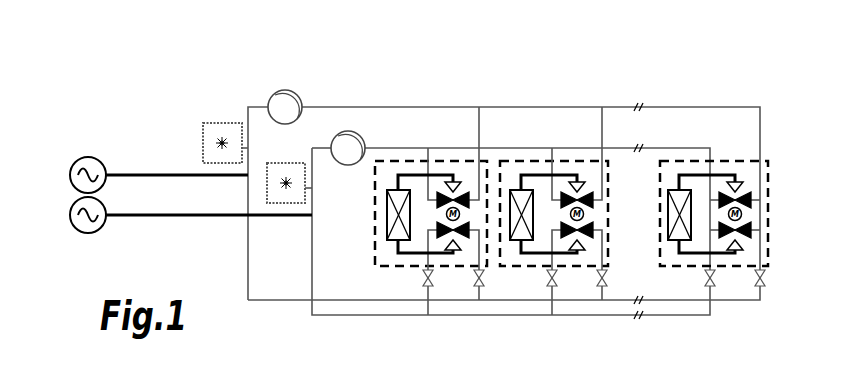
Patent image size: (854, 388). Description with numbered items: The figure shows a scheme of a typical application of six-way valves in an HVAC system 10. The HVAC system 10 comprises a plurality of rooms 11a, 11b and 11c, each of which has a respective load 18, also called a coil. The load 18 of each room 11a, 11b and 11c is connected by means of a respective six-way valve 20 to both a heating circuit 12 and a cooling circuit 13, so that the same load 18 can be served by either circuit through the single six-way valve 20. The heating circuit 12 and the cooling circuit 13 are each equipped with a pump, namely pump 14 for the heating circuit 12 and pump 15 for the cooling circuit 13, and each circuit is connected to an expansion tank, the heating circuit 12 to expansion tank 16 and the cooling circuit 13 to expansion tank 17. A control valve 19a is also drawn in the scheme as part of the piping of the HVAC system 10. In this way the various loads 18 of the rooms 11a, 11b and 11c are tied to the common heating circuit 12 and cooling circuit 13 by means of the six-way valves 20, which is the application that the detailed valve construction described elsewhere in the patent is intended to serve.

The HVAC system 10 is at (166, 97).
The room 11a is at (402, 162).
The room 11b is at (530, 160).
The room 11c is at (707, 158).
The heating circuit 12 is at (221, 122).
The cooling circuit 13 is at (287, 204).
The pump 14 is at (286, 90).
The pump 15 is at (348, 166).
The expansion tank 16 is at (79, 158).
The expansion tank 17 is at (72, 232).
The load (coil) 18 is at (410, 285).
The control valve 19a is at (498, 326).
The 6-way valve 20 is at (431, 137).